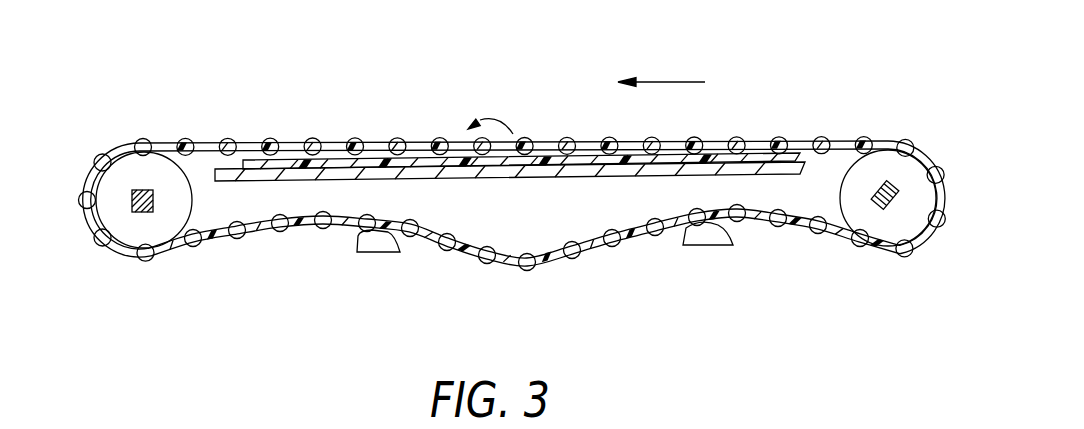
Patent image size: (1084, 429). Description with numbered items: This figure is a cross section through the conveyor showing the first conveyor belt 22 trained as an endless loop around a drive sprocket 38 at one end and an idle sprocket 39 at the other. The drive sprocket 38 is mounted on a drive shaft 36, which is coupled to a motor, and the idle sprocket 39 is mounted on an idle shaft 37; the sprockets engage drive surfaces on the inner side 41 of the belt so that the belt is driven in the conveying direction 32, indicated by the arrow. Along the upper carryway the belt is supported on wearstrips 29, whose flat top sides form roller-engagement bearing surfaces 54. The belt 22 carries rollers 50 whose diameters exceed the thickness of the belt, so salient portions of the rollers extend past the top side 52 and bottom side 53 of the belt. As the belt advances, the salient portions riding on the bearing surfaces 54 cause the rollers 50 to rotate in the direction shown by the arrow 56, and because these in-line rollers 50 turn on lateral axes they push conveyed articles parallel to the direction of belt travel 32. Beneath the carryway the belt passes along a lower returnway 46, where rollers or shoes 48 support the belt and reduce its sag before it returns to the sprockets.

The first conveyor belt 22 is at (928, 152).
The wearstrip 29 is at (376, 160).
The conveying direction 32 is at (668, 82).
The drive shaft 36 is at (152, 212).
The idle shaft 37 is at (872, 200).
The drive sprocket 38 is at (126, 172).
The idle sprocket 39 is at (903, 222).
The inner side of the belt 41 is at (264, 232).
The lower returnway 46 is at (418, 241).
The rollers or shoes 48 is at (705, 248).
The in-line rollers 50 is at (318, 138).
The top side of the belt 52 is at (205, 150).
The bottom side of the belt 53 is at (205, 150).
The roller-engagement bearing surface 54 is at (765, 157).
The roller rotation direction arrow 56 is at (498, 113).